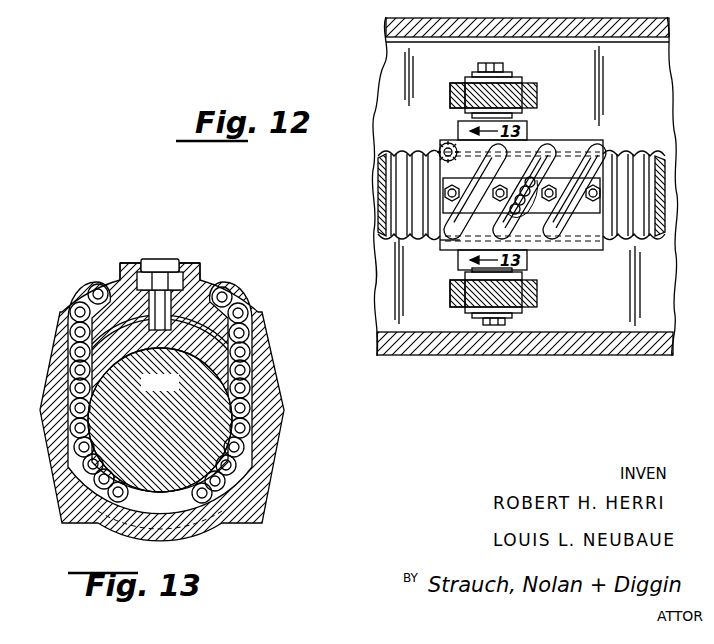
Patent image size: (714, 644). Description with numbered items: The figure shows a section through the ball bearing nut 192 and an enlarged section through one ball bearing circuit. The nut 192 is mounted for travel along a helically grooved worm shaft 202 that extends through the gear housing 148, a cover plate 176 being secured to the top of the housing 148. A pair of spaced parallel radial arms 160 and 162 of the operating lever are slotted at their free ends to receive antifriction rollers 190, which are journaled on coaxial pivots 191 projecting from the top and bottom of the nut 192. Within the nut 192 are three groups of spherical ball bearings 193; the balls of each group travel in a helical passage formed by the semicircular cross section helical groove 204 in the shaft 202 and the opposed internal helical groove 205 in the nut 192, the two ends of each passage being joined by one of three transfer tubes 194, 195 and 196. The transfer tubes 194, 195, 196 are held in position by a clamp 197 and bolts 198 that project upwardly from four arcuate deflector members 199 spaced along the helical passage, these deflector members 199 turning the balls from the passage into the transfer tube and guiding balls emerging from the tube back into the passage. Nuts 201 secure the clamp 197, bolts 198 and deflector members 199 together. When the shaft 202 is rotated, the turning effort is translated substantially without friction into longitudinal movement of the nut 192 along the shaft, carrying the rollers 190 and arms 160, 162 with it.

In FIG. 12, the gear housing 148 is at (556, 354).
In FIG. 12, the radial arm 160 is at (540, 296).
In FIG. 12, the radial arm 162 is at (538, 92).
In FIG. 12, the cover plate 176 is at (595, 27).
In FIG. 12, the antifriction roller 190 is at (456, 86).
In FIG. 12, the pivot 191 is at (484, 62).
In FIG. 13, the ball bearing nut 192 is at (272, 455).
In FIG. 12, the spherical ball bearings 193 is at (504, 203).
In FIG. 13, the spherical ball bearings 193 is at (68, 292).
In FIG. 12, the transfer tube 194 is at (603, 147).
In FIG. 12, the transfer tube 195 is at (549, 155).
In FIG. 12, the transfer tube 196 is at (488, 156).
In FIG. 12, the clamp 197 is at (596, 200).
In FIG. 13, the clamp 197 is at (120, 292).
In FIG. 12, the bolt 198 is at (552, 215).
In FIG. 13, the bolt 198 is at (170, 259).
In FIG. 13, the arcuate deflector member 199 is at (234, 356).
In FIG. 12, the nut 201 is at (448, 242).
In FIG. 13, the nut 201 is at (137, 267).
In FIG. 13, the worm shaft 202 is at (177, 392).
In FIG. 12, the helical groove 204 is at (522, 182).
In FIG. 12, the internal helical groove 205 is at (442, 144).